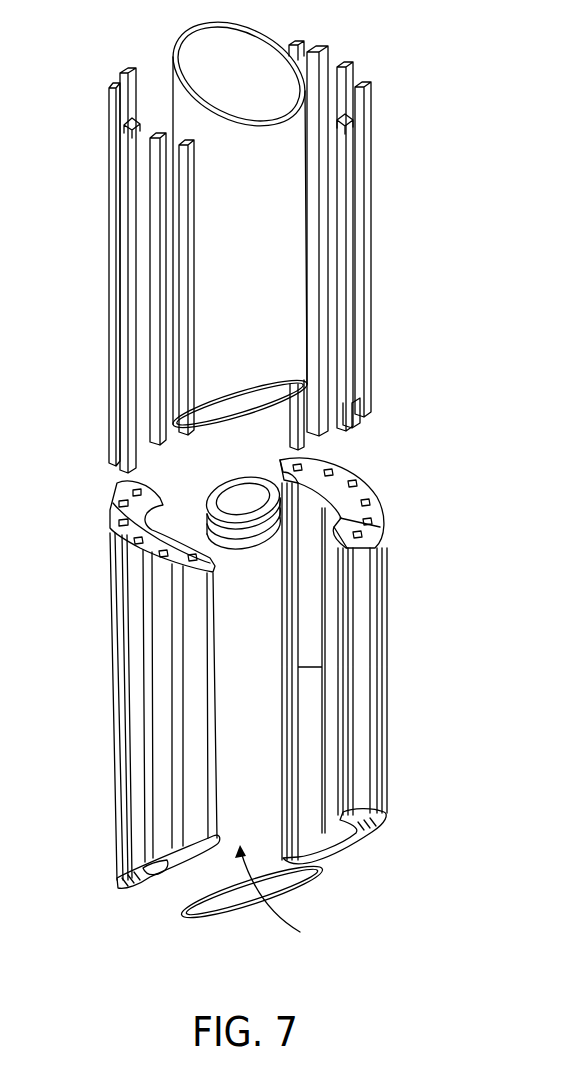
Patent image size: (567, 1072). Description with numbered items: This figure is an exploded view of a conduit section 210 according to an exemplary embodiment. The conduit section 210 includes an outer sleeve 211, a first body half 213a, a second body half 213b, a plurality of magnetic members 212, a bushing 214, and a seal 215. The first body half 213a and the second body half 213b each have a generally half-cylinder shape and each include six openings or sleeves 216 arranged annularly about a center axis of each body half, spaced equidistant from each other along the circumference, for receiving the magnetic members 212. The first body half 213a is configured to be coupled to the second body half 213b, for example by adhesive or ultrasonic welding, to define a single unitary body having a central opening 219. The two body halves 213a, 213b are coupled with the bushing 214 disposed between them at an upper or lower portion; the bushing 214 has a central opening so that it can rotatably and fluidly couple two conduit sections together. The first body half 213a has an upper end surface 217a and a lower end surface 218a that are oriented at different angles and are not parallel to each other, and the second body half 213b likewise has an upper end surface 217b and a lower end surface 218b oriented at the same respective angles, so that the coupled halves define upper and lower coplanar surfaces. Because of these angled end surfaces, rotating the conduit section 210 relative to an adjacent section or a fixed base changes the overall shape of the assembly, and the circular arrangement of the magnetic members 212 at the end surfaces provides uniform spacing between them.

The conduit section 210 is at (76, 238).
The outer sleeve 211 is at (195, 122).
The magnetic members 212 is at (363, 290).
The first body half 213a is at (373, 723).
The second body half 213b is at (132, 695).
The bushing 214 is at (263, 523).
The seal 215 is at (220, 917).
The sleeves 216 is at (116, 522).
The upper end surface 217a is at (367, 493).
The upper end surface 217b is at (117, 495).
The lower end surface 218a is at (367, 843).
The lower end surface 218b is at (143, 873).
The central opening 219 is at (287, 894).